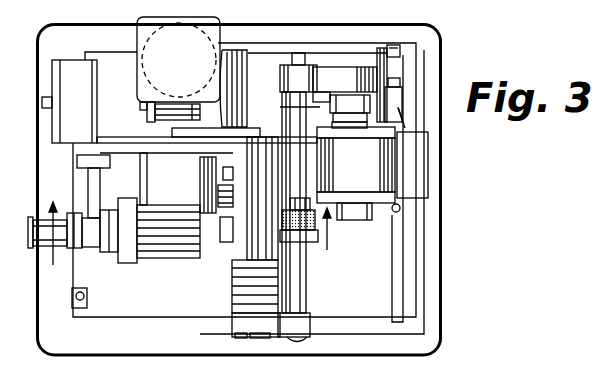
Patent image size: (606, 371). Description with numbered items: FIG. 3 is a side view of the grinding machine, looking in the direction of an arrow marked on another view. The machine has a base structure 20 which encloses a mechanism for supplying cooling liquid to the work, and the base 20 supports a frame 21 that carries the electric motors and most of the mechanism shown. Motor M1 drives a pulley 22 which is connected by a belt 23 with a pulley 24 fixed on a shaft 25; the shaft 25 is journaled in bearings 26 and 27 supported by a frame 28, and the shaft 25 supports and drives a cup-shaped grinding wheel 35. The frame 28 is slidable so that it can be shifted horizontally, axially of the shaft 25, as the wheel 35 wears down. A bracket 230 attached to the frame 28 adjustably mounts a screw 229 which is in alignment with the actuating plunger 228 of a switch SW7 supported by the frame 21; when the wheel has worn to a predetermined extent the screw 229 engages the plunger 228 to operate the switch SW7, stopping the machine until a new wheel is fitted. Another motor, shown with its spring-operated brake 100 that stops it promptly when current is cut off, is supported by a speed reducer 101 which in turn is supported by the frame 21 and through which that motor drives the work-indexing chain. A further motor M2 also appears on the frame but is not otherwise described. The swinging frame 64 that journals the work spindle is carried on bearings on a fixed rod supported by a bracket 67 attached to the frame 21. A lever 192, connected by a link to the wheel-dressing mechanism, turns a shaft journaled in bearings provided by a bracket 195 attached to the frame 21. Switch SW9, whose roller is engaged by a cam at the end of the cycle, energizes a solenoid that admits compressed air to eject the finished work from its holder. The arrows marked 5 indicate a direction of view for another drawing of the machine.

The base structure 20 is at (441, 250).
The motor M2 is at (138, 43).
The brake 100 is at (138, 88).
The speed reducer 101 is at (148, 113).
The pulley 24 is at (292, 63).
The pulley 22 is at (347, 65).
The belt 23 is at (353, 78).
The bracket 230 is at (388, 46).
The screw 229 is at (398, 52).
The actuating plunger 228 is at (399, 83).
The bearing 26 is at (290, 103).
The bearing 27 is at (290, 183).
The frame 28 is at (300, 157).
The bracket 195 is at (307, 303).
The shaft 25 is at (288, 196).
The cup-shaped grinding wheel 35 is at (282, 217).
The switch SW9 is at (229, 233).
The frame 21 is at (232, 285).
The lever 192 is at (232, 322).
The swinging frame 64 is at (175, 252).
The bracket 67 is at (85, 180).
The direction arrow 5 is at (187, 247).
The motor M1 is at (343, 217).
The switch SW7 is at (414, 165).